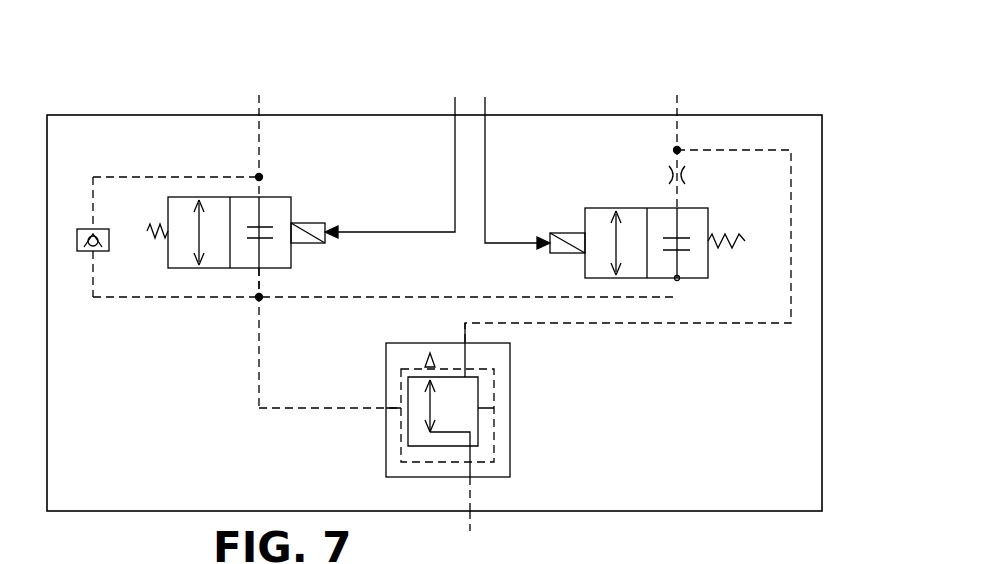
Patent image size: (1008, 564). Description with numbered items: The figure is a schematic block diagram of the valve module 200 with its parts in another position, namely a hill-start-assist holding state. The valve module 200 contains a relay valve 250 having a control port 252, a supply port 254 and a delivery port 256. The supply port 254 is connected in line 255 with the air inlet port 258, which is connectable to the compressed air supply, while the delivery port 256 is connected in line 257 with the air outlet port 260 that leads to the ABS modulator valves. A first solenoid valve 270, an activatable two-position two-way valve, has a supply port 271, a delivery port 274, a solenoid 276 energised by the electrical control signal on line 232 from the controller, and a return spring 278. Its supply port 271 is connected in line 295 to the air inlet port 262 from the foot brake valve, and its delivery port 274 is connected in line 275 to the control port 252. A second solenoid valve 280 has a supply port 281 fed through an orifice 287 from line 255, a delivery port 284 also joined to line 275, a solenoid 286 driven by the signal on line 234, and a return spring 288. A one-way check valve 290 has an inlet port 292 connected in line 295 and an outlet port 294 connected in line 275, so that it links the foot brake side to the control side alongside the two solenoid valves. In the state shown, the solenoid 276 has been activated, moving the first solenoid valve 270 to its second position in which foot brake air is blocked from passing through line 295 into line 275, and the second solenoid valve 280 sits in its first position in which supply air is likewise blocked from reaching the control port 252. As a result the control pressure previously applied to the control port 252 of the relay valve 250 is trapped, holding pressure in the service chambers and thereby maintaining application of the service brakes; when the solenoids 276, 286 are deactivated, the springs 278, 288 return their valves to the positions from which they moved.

The valve module 200 is at (770, 46).
The line 232 is at (453, 106).
The line 234 is at (487, 106).
The relay valve 250 is at (511, 422).
The control port 252 is at (385, 407).
The supply port 254 is at (464, 342).
The line 255 is at (679, 131).
The delivery port 256 is at (469, 478).
The line 257 is at (473, 495).
The air inlet port 258 is at (679, 113).
The air outlet port 260 is at (469, 512).
The air inlet port 262 is at (261, 113).
The first solenoid valve 270 is at (280, 197).
The supply port 271 is at (262, 196).
The delivery port 274 is at (262, 268).
The line 275 is at (151, 298).
The solenoid 276 is at (310, 223).
The spring 278 is at (158, 224).
The second solenoid valve 280 is at (600, 208).
The supply port 281 is at (679, 207).
The delivery port 284 is at (679, 280).
The solenoid 286 is at (568, 233).
The orifice 287 is at (673, 172).
The spring 288 is at (722, 235).
The one-way check valve 290 is at (82, 252).
The inlet port 292 is at (93, 229).
The outlet port 294 is at (97, 252).
The line 295 is at (148, 176).